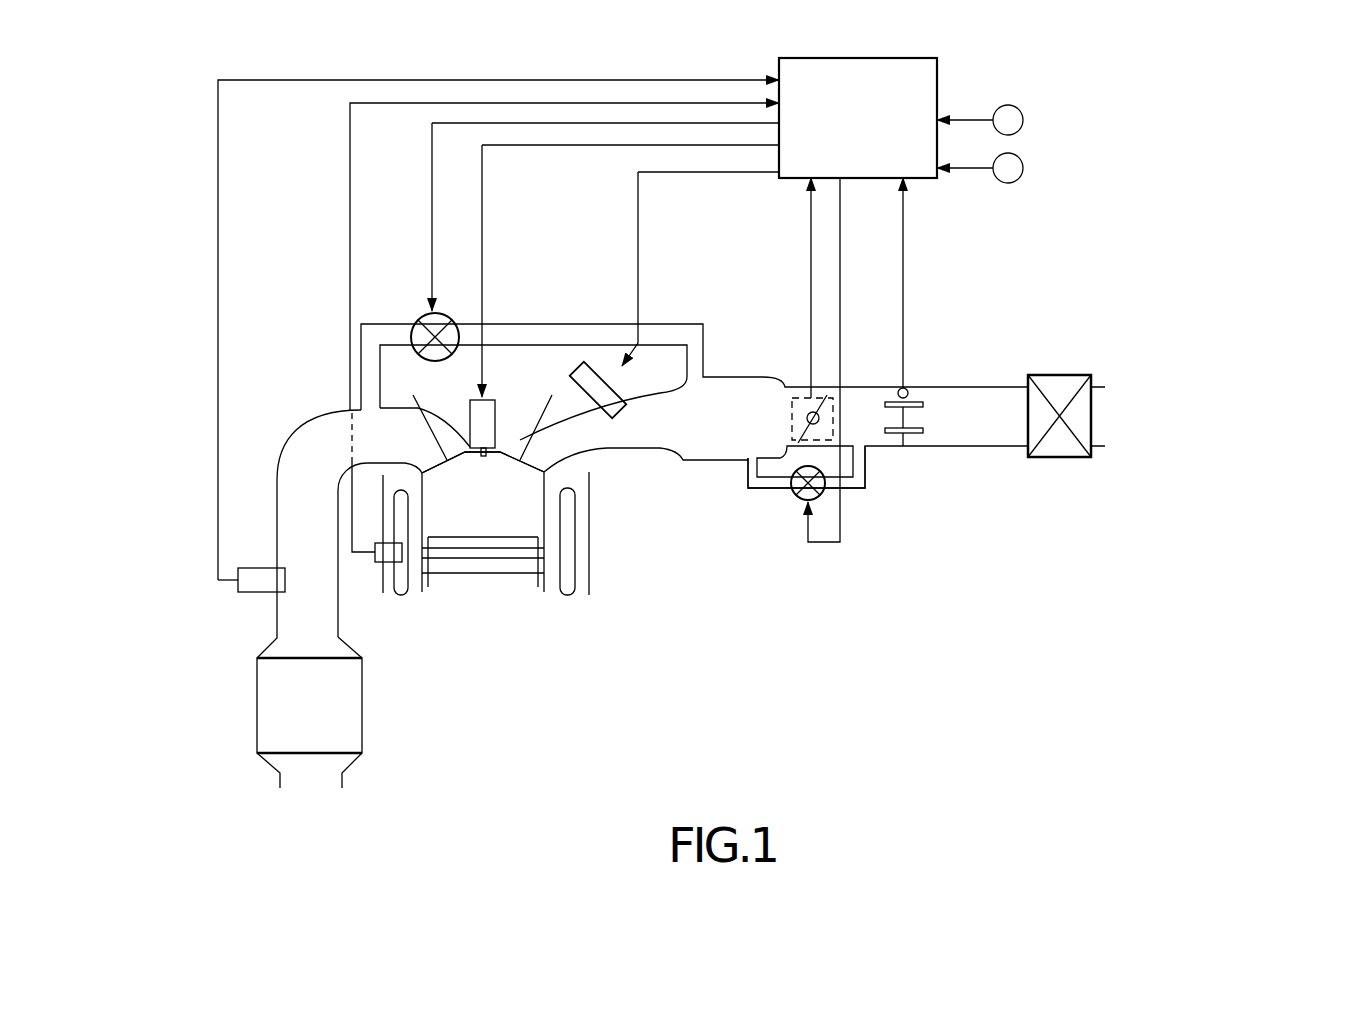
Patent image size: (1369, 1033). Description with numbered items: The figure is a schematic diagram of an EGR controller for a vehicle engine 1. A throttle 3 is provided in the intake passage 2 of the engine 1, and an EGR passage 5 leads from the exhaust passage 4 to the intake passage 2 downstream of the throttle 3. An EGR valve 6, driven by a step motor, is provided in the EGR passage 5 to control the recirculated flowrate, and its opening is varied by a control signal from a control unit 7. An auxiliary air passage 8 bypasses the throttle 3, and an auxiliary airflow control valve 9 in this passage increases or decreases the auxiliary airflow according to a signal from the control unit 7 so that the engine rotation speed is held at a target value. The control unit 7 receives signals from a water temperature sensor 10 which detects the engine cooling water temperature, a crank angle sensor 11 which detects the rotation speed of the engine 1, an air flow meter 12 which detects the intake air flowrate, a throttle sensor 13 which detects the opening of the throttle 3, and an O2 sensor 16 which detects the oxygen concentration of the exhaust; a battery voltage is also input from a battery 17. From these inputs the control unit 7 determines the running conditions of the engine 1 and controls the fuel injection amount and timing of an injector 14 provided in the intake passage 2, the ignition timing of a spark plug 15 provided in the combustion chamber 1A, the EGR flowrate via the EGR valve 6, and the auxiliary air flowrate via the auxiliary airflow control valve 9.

The engine 1 is at (510, 586).
The combustion chamber 1A is at (500, 519).
The intake passage 2 is at (930, 386).
The throttle 3 is at (797, 437).
The exhaust passage 4 is at (305, 432).
The EGR passage 5 is at (555, 335).
The EGR valve 6 is at (418, 322).
The control unit 7 is at (885, 58).
The auxiliary air passage 8 is at (858, 488).
The auxiliary airflow control valve 9 is at (800, 497).
The water temperature sensor 10 is at (376, 562).
The crank angle sensor 11 is at (1005, 105).
The air flow meter 12 is at (918, 452).
The throttle sensor 13 is at (795, 398).
The injector 14 is at (586, 400).
The spark plug 15 is at (470, 420).
The O2 sensor 16 is at (253, 595).
The battery 17 is at (1012, 183).